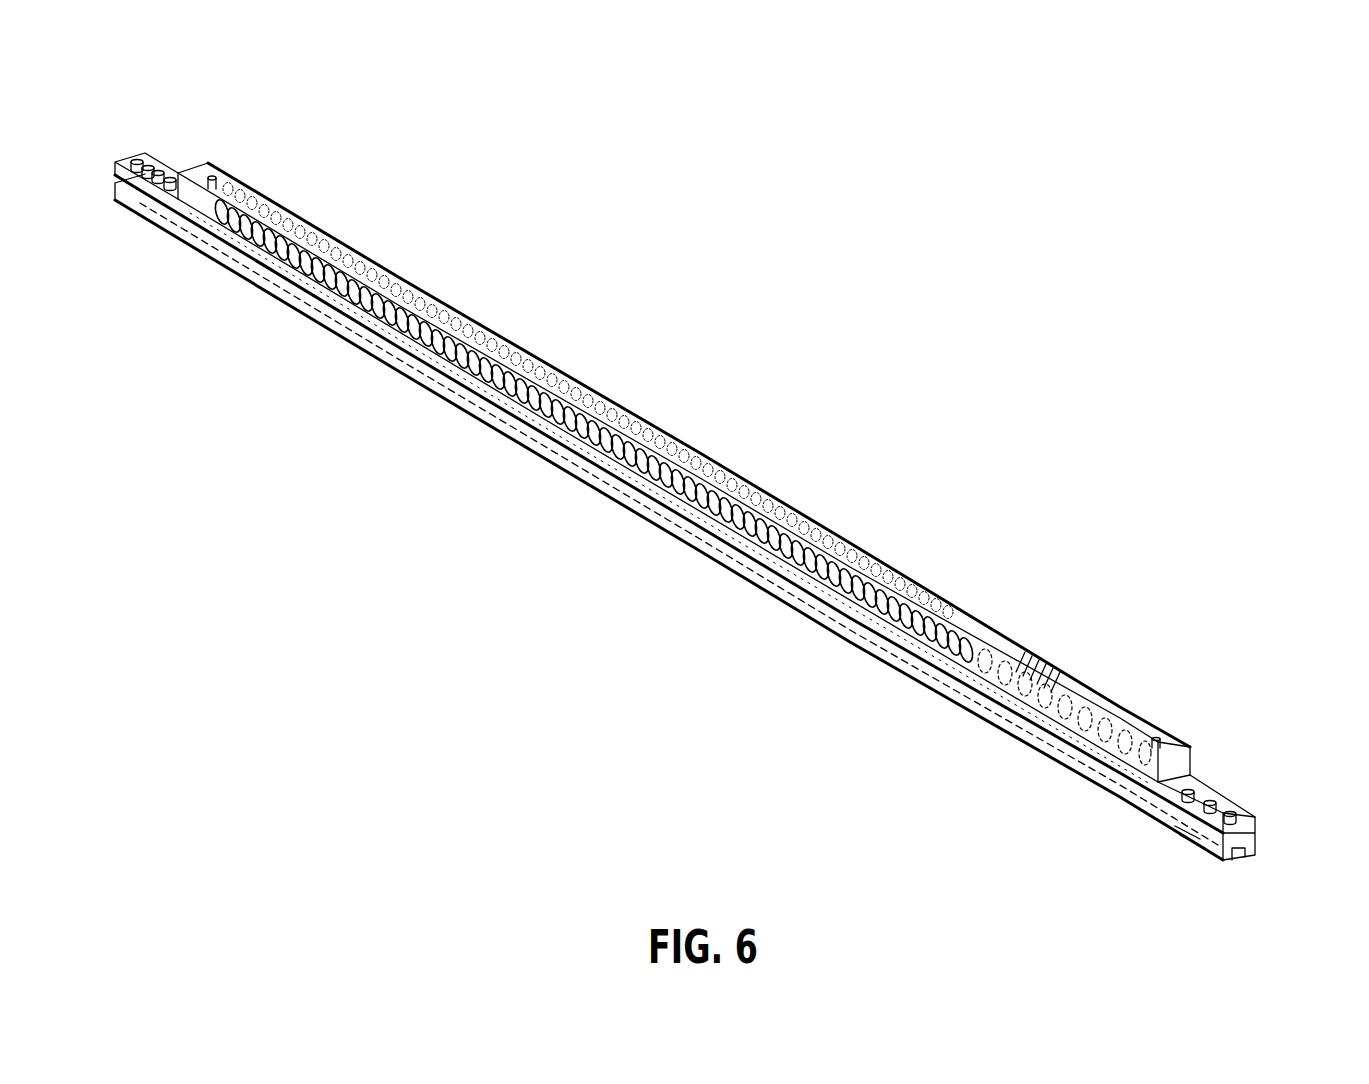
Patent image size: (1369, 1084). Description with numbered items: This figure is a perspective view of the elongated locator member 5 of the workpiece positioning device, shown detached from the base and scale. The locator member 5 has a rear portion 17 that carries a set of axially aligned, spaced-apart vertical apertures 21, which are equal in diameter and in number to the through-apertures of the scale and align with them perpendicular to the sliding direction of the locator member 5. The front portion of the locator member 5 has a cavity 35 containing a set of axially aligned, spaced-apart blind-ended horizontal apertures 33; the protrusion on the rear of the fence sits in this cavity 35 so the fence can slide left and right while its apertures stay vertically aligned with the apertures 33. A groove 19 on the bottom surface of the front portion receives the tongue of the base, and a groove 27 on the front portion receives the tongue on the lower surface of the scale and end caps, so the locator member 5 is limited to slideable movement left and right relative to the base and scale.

The locator member 5 is at (741, 512).
The rear portion 17 is at (1117, 718).
The groove 19 is at (741, 561).
The vertical apertures 21 is at (681, 484).
The groove 27 is at (1192, 836).
The blind-ended horizontal apertures 33 is at (164, 172).
The cavity 35 is at (1237, 860).